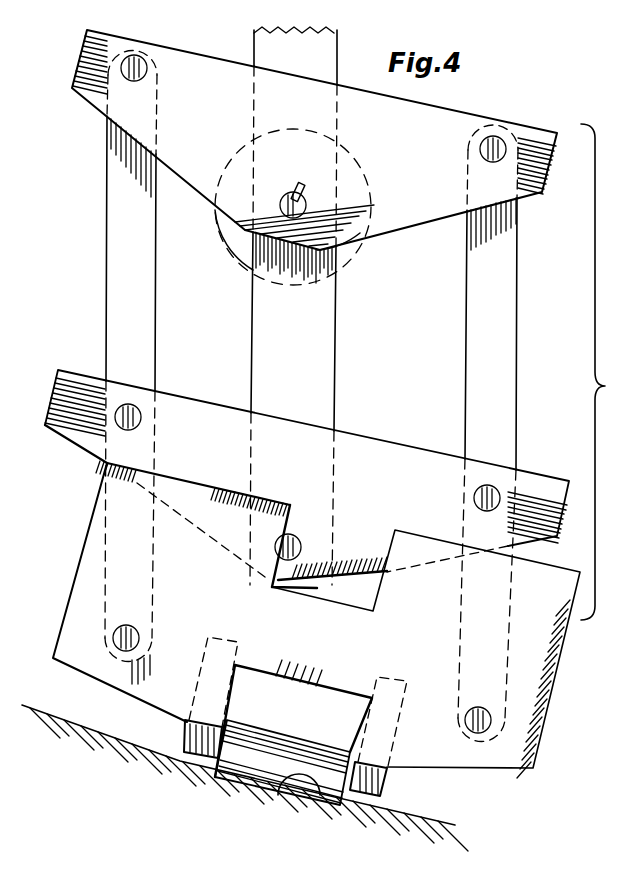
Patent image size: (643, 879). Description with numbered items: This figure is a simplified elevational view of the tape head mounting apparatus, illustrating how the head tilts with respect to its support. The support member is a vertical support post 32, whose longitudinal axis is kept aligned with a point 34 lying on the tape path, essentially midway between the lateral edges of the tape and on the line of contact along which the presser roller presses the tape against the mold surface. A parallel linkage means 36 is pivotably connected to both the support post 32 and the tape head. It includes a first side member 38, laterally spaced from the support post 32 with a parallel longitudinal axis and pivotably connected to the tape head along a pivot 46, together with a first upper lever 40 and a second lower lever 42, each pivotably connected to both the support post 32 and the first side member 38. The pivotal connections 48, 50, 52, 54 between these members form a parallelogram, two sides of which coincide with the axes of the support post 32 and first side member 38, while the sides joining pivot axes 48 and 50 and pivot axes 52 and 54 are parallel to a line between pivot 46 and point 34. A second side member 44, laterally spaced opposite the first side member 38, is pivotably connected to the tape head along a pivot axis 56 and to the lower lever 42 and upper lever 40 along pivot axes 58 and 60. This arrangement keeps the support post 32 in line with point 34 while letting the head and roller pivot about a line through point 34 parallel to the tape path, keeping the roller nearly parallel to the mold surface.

The support post 32 is at (305, 350).
The point 34 is at (320, 795).
The parallel linkage means 36 is at (605, 386).
The first side member 38 is at (506, 353).
The first upper lever 40 is at (225, 113).
The second lower lever 42 is at (220, 457).
The second side member 44 is at (151, 290).
The pivot 46 is at (491, 720).
The pivotal connection 48 is at (303, 203).
The pivotal connection 50 is at (501, 143).
The pivotal connection 52 is at (300, 540).
The pivotal connection 54 is at (494, 490).
The pivot axis 56 is at (123, 652).
The pivot axis 58 is at (121, 425).
The pivot axis 60 is at (123, 74).